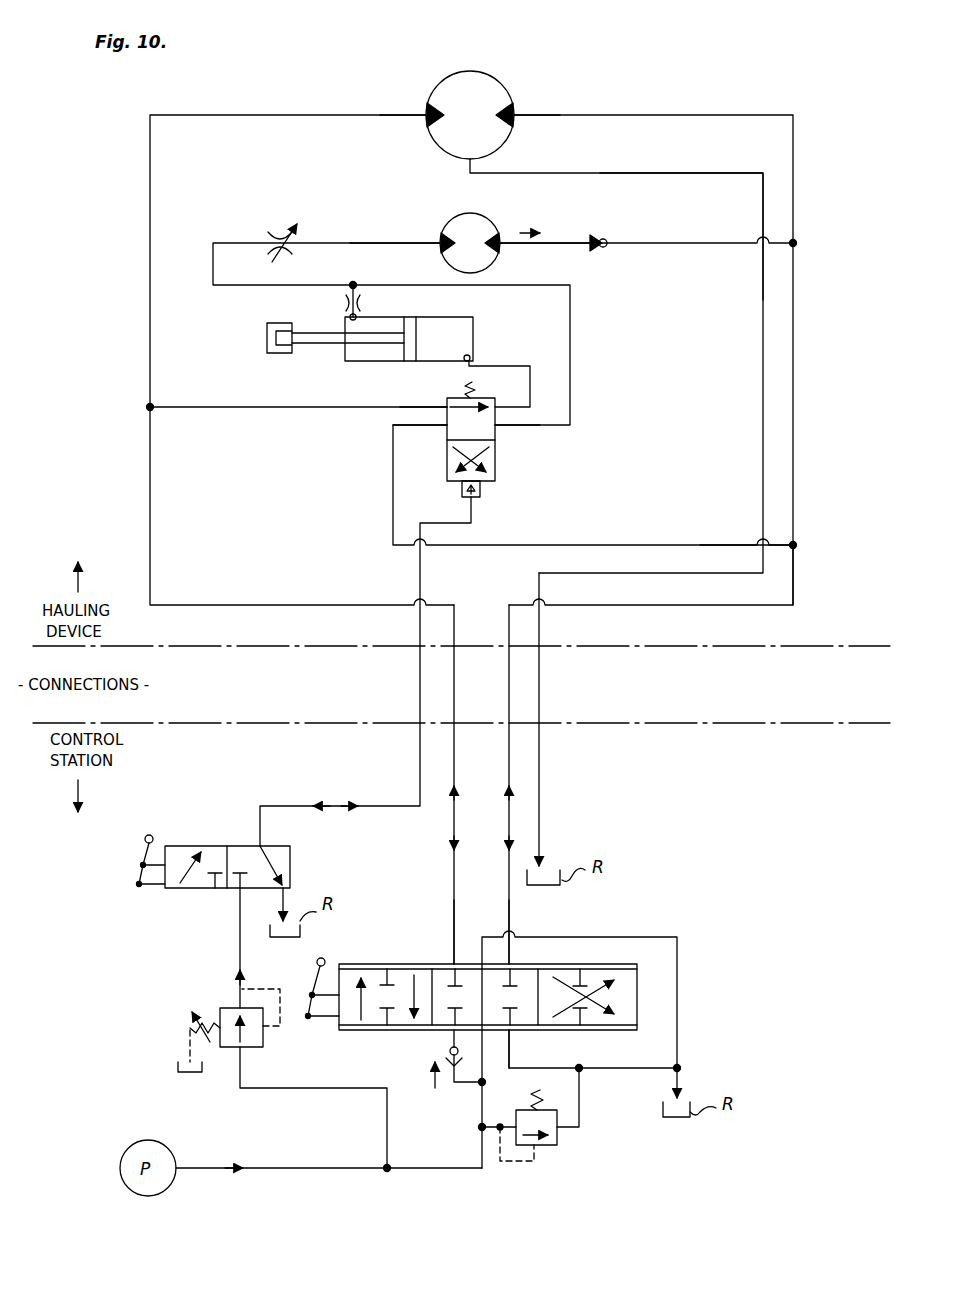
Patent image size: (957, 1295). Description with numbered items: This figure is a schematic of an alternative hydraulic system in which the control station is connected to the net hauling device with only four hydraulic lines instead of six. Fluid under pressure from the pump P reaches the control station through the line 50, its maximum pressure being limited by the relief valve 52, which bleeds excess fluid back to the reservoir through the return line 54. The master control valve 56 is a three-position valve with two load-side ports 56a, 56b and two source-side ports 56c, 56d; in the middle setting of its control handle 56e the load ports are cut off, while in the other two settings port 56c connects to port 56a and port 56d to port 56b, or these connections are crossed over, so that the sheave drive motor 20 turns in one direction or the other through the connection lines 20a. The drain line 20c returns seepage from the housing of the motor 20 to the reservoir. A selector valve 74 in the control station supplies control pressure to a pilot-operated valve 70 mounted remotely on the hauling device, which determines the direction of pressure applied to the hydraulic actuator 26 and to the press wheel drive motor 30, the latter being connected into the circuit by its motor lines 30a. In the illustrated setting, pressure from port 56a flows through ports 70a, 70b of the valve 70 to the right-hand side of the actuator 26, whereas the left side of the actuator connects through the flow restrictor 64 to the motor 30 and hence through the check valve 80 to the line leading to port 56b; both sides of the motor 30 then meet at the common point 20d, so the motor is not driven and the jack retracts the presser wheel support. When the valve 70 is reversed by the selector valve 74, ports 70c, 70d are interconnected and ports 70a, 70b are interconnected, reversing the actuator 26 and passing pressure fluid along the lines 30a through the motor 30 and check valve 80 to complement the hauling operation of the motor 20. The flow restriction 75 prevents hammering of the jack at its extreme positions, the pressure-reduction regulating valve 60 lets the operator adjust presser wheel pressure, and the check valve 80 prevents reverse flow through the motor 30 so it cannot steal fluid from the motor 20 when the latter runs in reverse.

The sheave drive motor 20 is at (469, 72).
The connection lines 20a is at (400, 113).
The drain line 20c is at (638, 172).
The common point 20d is at (797, 543).
The press wheel drive motor 30 is at (493, 220).
The pump lines 30a is at (384, 243).
The check valve 80 is at (600, 249).
The flow restrictor 64 is at (280, 256).
The flow restriction 75 is at (360, 303).
The hydraulic actuator 26 is at (483, 329).
The pilot-operated valve 70 is at (446, 476).
The port of pilot-operated valve 70a is at (446, 404).
The port of pilot-operated valve 70b is at (497, 404).
The port of pilot-operated valve 70c is at (445, 430).
The port of pilot-operated valve 70d is at (496, 428).
The selector valve 74 is at (178, 845).
The pressure-reduction regulating valve 60 is at (260, 1047).
The pressure line 50 is at (290, 1165).
The relief valve 52 is at (558, 1140).
The return line 54 is at (675, 1070).
The master control valve 56 is at (372, 958).
The load-side port 56a is at (450, 962).
The load-side port 56b is at (514, 963).
The source-side port 56c is at (450, 1032).
The source-side port 56d is at (512, 1034).
The control handle 56e is at (310, 978).